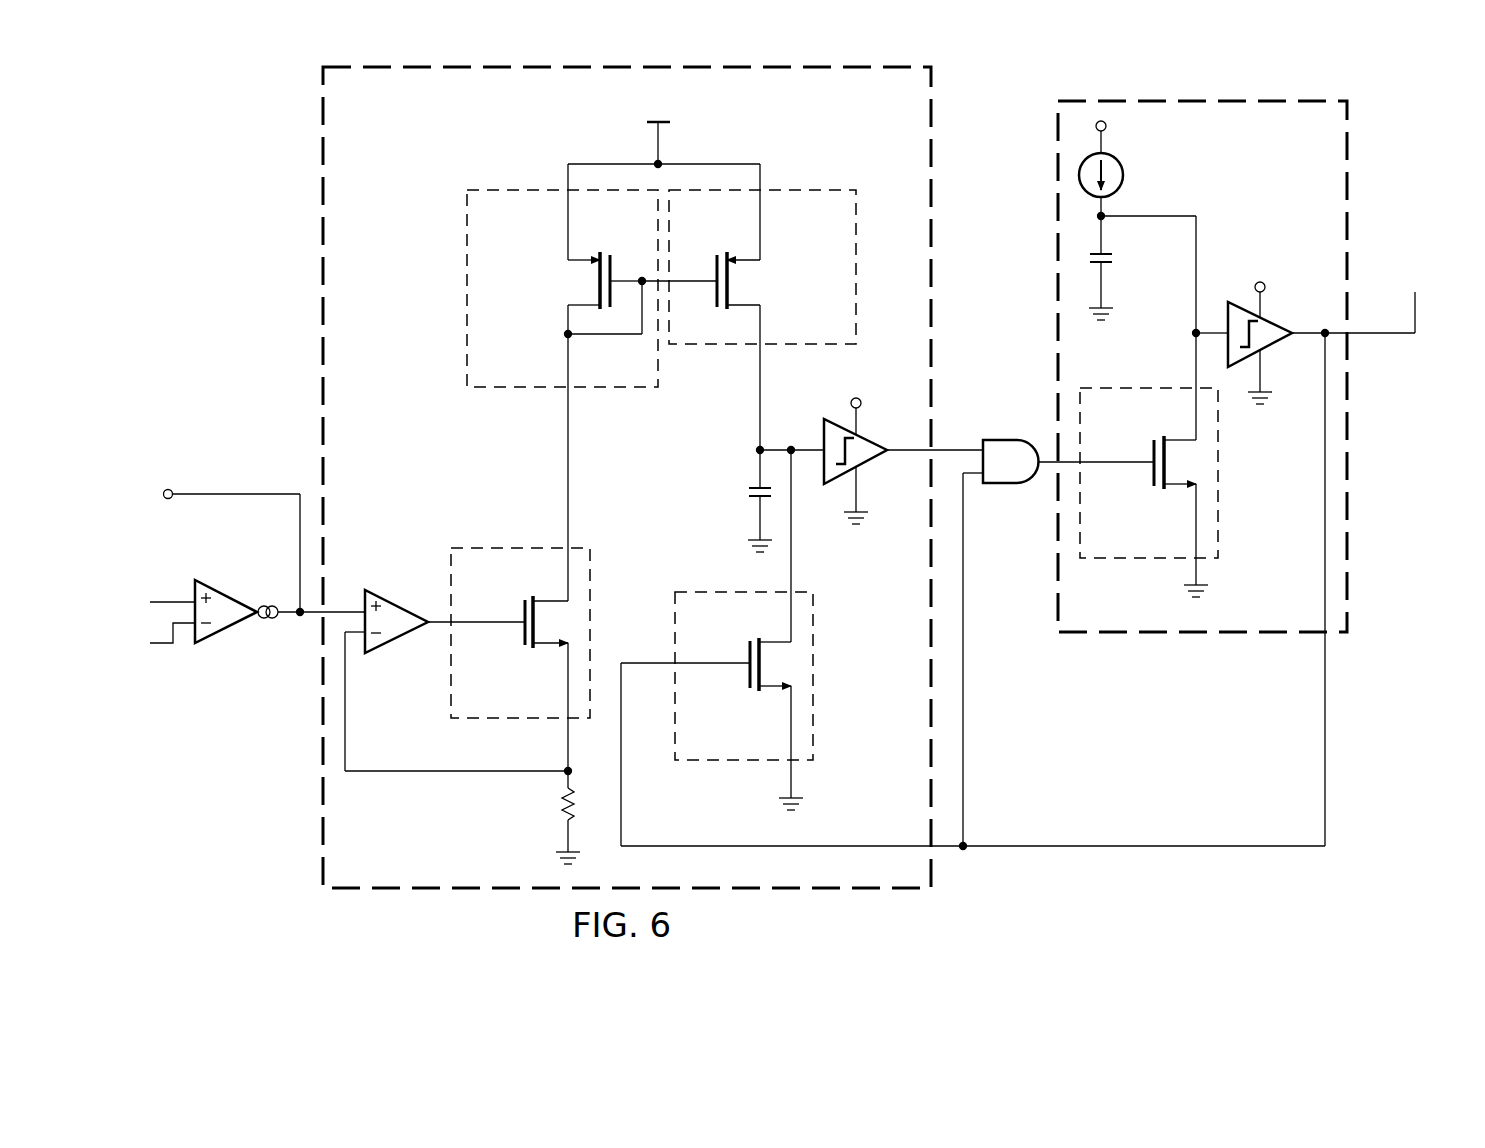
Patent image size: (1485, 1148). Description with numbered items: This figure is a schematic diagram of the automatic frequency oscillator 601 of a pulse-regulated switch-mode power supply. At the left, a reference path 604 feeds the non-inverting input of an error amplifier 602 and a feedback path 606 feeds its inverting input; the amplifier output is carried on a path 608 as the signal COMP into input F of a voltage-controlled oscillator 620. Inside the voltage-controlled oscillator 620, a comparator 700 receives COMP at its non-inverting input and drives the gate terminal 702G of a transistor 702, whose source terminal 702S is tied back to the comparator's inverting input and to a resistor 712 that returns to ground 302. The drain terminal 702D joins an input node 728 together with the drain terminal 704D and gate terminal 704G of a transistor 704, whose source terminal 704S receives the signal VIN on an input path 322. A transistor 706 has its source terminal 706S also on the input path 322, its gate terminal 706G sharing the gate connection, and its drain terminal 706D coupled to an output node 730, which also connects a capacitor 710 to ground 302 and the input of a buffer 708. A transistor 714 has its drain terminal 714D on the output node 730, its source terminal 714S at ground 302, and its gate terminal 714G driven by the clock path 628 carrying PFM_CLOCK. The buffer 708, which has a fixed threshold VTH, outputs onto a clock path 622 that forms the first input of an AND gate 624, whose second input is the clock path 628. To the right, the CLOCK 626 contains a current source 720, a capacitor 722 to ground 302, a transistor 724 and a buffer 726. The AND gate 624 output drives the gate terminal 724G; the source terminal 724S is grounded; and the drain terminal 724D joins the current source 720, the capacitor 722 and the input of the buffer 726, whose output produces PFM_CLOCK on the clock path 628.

The automatic frequency oscillator 601 is at (215, 130).
The voltage-controlled oscillator 620 is at (321, 378).
The input path 322 is at (655, 142).
The transistor 704 is at (523, 288).
The source terminal 704S is at (568, 257).
The gate terminal 704G is at (628, 278).
The drain terminal 704D is at (568, 308).
The transistor 706 is at (749, 237).
The source terminal 706S is at (760, 257).
The gate terminal 706G is at (700, 278).
The drain terminal 706D is at (760, 308).
The buffer 726 is at (565, 336).
The output node 730 is at (755, 448).
The capacitor 710 is at (748, 492).
The buffer 708 is at (888, 472).
The clock path 622 is at (950, 448).
The AND gate 624 is at (1005, 483).
The ground 302 is at (748, 545).
The current source 720 is at (1125, 172).
The capacitor 722 is at (1115, 258).
The CLOCK 626 is at (1294, 194).
The input node 728 is at (1192, 336).
The clock path 628 is at (1380, 338).
The transistor 724 is at (1149, 506).
The drain terminal 724D is at (1192, 438).
The gate terminal 724G is at (1140, 466).
The source terminal 724S is at (1192, 494).
The transistor 702 is at (509, 600).
The drain terminal 702D is at (566, 594).
The gate terminal 702G is at (507, 628).
The source terminal 702S is at (566, 655).
The comparator 700 is at (400, 642).
The path 608 is at (238, 495).
The reference path 604 is at (172, 600).
The error amplifier 602 is at (230, 632).
The feedback path 606 is at (162, 650).
The resistor 712 is at (563, 808).
The transistor 714 is at (744, 639).
The drain terminal 714D is at (789, 640).
The gate terminal 714G is at (732, 672).
The source terminal 714S is at (789, 700).